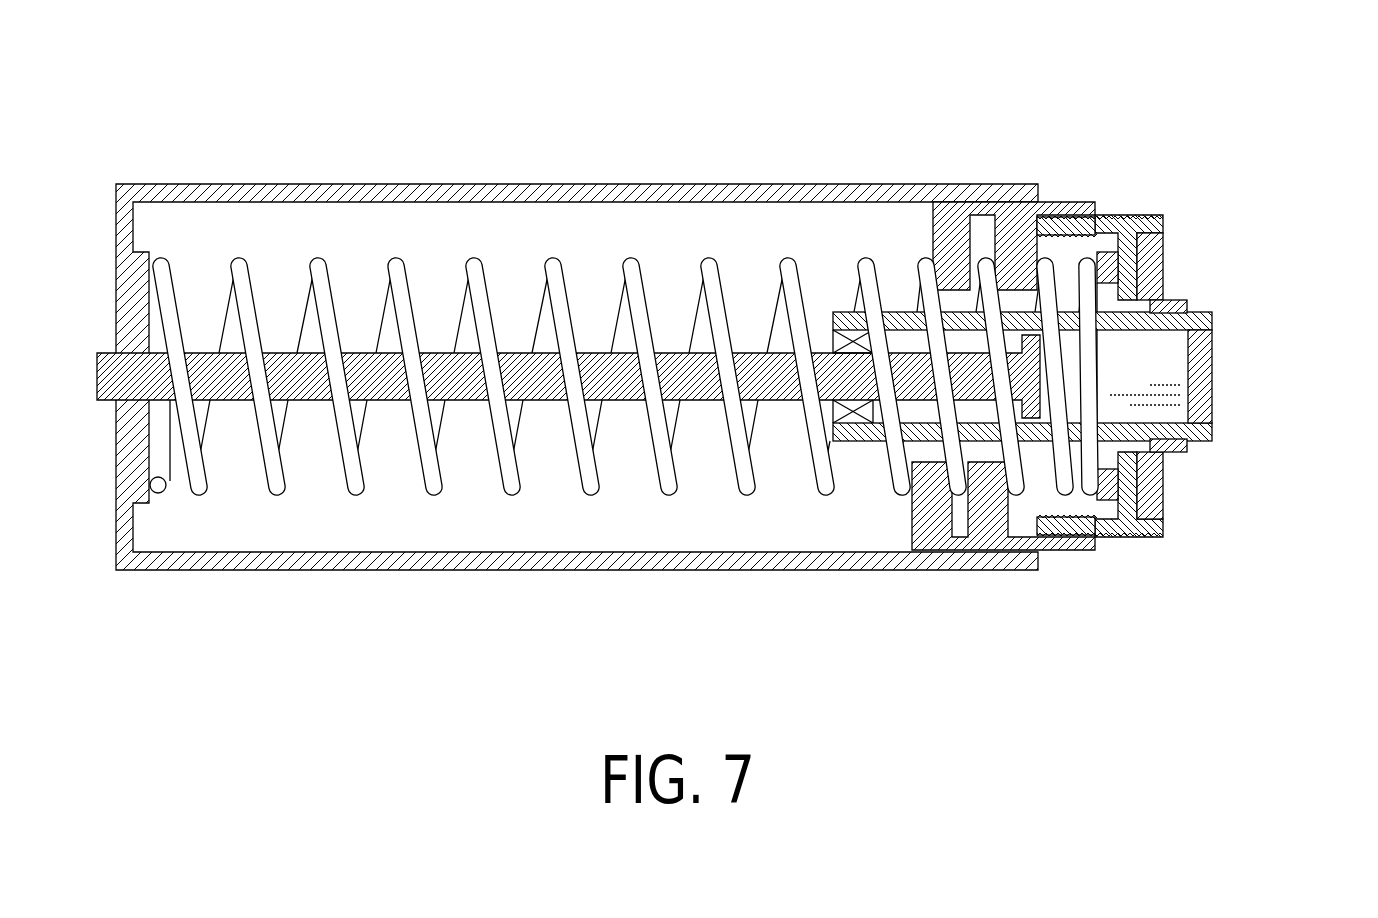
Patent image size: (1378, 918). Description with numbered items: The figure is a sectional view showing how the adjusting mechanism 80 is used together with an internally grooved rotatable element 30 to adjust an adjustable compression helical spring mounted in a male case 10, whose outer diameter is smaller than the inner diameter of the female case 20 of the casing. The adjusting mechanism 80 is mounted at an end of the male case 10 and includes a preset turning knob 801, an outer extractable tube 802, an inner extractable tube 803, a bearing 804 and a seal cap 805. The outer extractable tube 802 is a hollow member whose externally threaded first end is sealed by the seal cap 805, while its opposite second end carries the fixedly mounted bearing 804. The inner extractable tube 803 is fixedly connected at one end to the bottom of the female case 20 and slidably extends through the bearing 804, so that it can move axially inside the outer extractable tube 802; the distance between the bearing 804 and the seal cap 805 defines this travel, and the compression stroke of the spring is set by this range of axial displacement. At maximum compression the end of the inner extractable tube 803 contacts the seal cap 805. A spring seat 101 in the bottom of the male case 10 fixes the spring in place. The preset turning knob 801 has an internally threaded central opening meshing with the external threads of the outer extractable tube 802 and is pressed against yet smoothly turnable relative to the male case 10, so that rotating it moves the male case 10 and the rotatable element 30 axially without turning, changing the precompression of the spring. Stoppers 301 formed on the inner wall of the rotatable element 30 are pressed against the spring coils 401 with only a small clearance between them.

The female case 20 is at (467, 183).
The inner extractable tube 803 is at (672, 352).
The bearing 804 is at (838, 310).
The spring seat 101 is at (1105, 250).
The adjusting mechanism 80 is at (1193, 358).
The outer extractable tube 802 is at (1192, 310).
The seal cap 805 is at (1213, 378).
The preset turning knob 801 is at (1163, 480).
The male case 10 is at (1135, 540).
The internally grooved rotatable element 30 is at (935, 457).
The stoppers 301 is at (930, 516).
The spring coils 401 is at (460, 445).